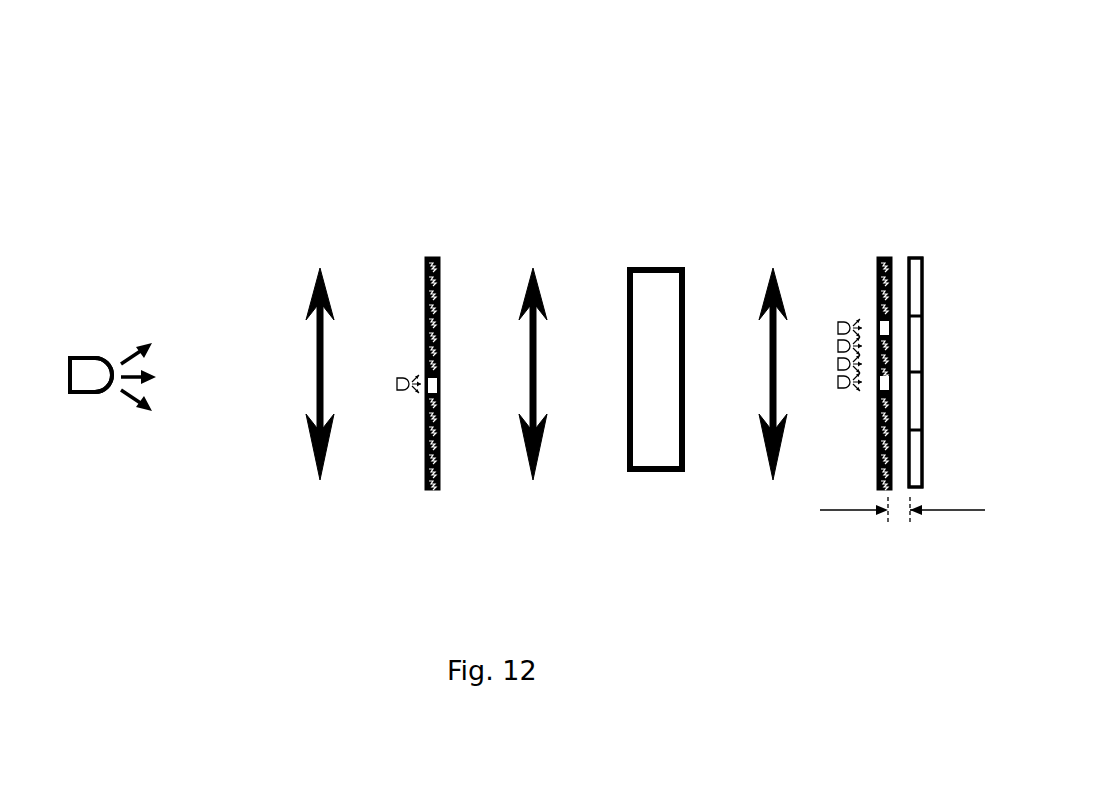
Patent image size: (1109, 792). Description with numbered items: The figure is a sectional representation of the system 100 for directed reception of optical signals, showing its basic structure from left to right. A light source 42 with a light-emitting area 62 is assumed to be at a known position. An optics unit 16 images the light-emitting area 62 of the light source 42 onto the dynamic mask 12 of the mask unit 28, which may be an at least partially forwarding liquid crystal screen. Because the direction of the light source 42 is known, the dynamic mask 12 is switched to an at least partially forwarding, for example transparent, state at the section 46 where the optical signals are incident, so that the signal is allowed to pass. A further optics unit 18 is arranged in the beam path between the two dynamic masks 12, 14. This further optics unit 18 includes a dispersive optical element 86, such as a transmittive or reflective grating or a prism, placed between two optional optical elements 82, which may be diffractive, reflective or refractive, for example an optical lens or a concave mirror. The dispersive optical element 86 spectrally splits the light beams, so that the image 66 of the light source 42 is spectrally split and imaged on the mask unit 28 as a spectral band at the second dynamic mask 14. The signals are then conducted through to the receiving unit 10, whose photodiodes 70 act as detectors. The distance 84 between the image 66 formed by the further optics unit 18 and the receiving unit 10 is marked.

The system 100 is at (658, 132).
The light source 42 is at (78, 357).
The light-emitting area 62 is at (78, 357).
The optics unit 16 is at (322, 268).
The dynamic mask 12 is at (433, 257).
The mask unit 28 is at (433, 257).
The section 46 is at (425, 372).
The image 66 is at (400, 392).
The further optics unit 18 is at (535, 268).
The optical elements 82 is at (535, 268).
The dispersive optical element 86 is at (650, 267).
The dynamic mask 14 is at (883, 257).
The receiving unit 10 is at (913, 257).
The photodiodes 70 is at (913, 257).
The distance 84 is at (905, 514).